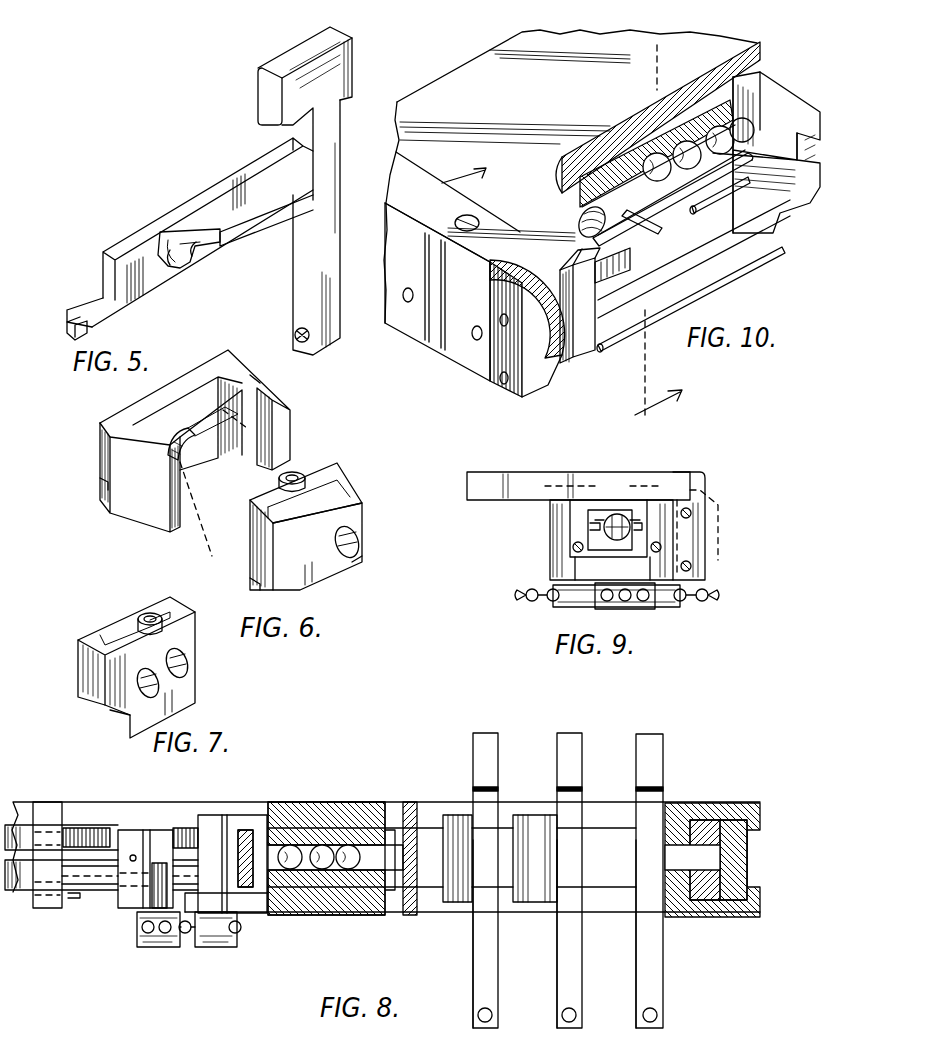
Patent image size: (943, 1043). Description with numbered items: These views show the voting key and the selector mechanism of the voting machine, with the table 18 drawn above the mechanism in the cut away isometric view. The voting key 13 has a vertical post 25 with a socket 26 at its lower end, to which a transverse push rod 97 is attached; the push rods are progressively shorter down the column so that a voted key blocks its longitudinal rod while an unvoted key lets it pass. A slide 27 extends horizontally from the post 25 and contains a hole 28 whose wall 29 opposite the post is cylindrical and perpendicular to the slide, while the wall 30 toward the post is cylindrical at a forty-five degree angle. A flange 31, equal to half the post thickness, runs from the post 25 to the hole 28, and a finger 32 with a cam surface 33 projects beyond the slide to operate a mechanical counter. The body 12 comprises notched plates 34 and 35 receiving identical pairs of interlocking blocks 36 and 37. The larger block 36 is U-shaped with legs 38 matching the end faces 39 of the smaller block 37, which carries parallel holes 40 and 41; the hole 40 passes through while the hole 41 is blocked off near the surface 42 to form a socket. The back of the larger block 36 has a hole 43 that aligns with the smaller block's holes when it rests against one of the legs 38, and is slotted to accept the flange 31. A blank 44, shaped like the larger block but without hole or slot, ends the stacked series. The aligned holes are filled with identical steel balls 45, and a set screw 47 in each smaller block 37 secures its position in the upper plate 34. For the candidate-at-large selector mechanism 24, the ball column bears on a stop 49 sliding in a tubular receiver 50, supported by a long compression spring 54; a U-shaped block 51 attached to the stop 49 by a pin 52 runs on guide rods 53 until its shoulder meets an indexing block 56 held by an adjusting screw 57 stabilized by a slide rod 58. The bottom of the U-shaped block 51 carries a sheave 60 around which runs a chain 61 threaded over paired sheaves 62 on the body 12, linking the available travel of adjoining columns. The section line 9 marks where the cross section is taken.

In FIG. 10, the section line 9— 9 is at (521, 307).
In FIG. 9, the body 12 is at (548, 539).
In FIG. 8, the body 12 is at (348, 802).
In FIG. 10, the body 12 is at (475, 300).
In FIG. 5, the voting key 13 is at (257, 73).
In FIG. 8, the voting key 13 is at (496, 734).
In FIG. 10, the table 18 is at (570, 223).
In FIG. 9, the candidate-at-large selector mechanism 24 is at (730, 490).
In FIG. 8, the candidate-at-large selector mechanism 24 is at (144, 808).
In FIG. 10, the candidate-at-large selector mechanism 24 is at (708, 288).
In FIG. 5, the vertical post 25 is at (340, 260).
In FIG. 8, the vertical post 25 is at (586, 993).
In FIG. 5, the socket 26 is at (295, 336).
In FIG. 5, the slide 27 is at (182, 206).
In FIG. 5, the hole 28 is at (188, 268).
In FIG. 5, the wall 29 is at (168, 268).
In FIG. 5, the wall 30 is at (195, 260).
In FIG. 5, the flange 31 is at (270, 215).
In FIG. 8, the flange 31 is at (398, 861).
In FIG. 5, the finger 32 is at (95, 300).
In FIG. 5, the cam surface 33 is at (70, 313).
In FIG. 8, the notched plate 34 is at (412, 802).
In FIG. 10, the notched plate 34 is at (627, 42).
In FIG. 8, the notched plate 35 is at (399, 913).
In FIG. 6, the larger block 36 is at (134, 407).
In FIG. 6, the smaller block 37 is at (243, 546).
In FIG. 7, the smaller block 37 is at (202, 688).
In FIG. 8, the smaller block 37 is at (302, 801).
In FIG. 6, the legs 38 is at (274, 410).
In FIG. 8, the legs 38 is at (443, 867).
In FIG. 6, the end faces 39 is at (360, 512).
In FIG. 6, the hole 40 is at (359, 537).
In FIG. 7, the hole 40 is at (147, 693).
In FIG. 7, the hole 41 is at (183, 656).
In FIG. 6, the surface 42 is at (321, 573).
In FIG. 7, the surface 42 is at (80, 661).
In FIG. 6, the hole 43 is at (180, 433).
In FIG. 8, the blank 44 is at (741, 869).
In FIG. 8, the steel balls 45 is at (360, 851).
In FIG. 10, the steel balls 45 is at (741, 129).
In FIG. 6, the set screw 47 is at (296, 471).
In FIG. 7, the set screw 47 is at (148, 612).
In FIG. 9, the stop 49 is at (620, 516).
In FIG. 10, the stop 49 is at (587, 209).
In FIG. 9, the tubular receiver 50 is at (605, 518).
In FIG. 10, the tubular receiver 50 is at (705, 212).
In FIG. 9, the U-shaped block 51 is at (568, 563).
In FIG. 8, the U-shaped block 51 is at (130, 910).
In FIG. 9, the pin 52 is at (595, 523).
In FIG. 10, the pin 52 is at (649, 237).
In FIG. 9, the guide rods 53 is at (580, 553).
In FIG. 10, the guide rods 53 is at (743, 188).
In FIG. 10, the compression spring 54 is at (580, 220).
In FIG. 9, the indexing block 56 is at (707, 563).
In FIG. 8, the indexing block 56 is at (41, 913).
In FIG. 10, the indexing block 56 is at (596, 333).
In FIG. 9, the adjusting screw 57 is at (706, 541).
In FIG. 8, the adjusting screw 57 is at (93, 830).
In FIG. 10, the adjusting screw 57 is at (609, 284).
In FIG. 8, the slide rod 58 is at (77, 899).
In FIG. 10, the slide rod 58 is at (723, 252).
In FIG. 9, the sheave 60 is at (613, 608).
In FIG. 8, the sheave 60 is at (149, 948).
In FIG. 9, the chain 61 is at (529, 602).
In FIG. 8, the chain 61 is at (186, 936).
In FIG. 9, the paired sheaves 62 is at (567, 603).
In FIG. 8, the paired sheaves 62 is at (216, 948).
In FIG. 8, the transverse push rods 97 is at (577, 1018).